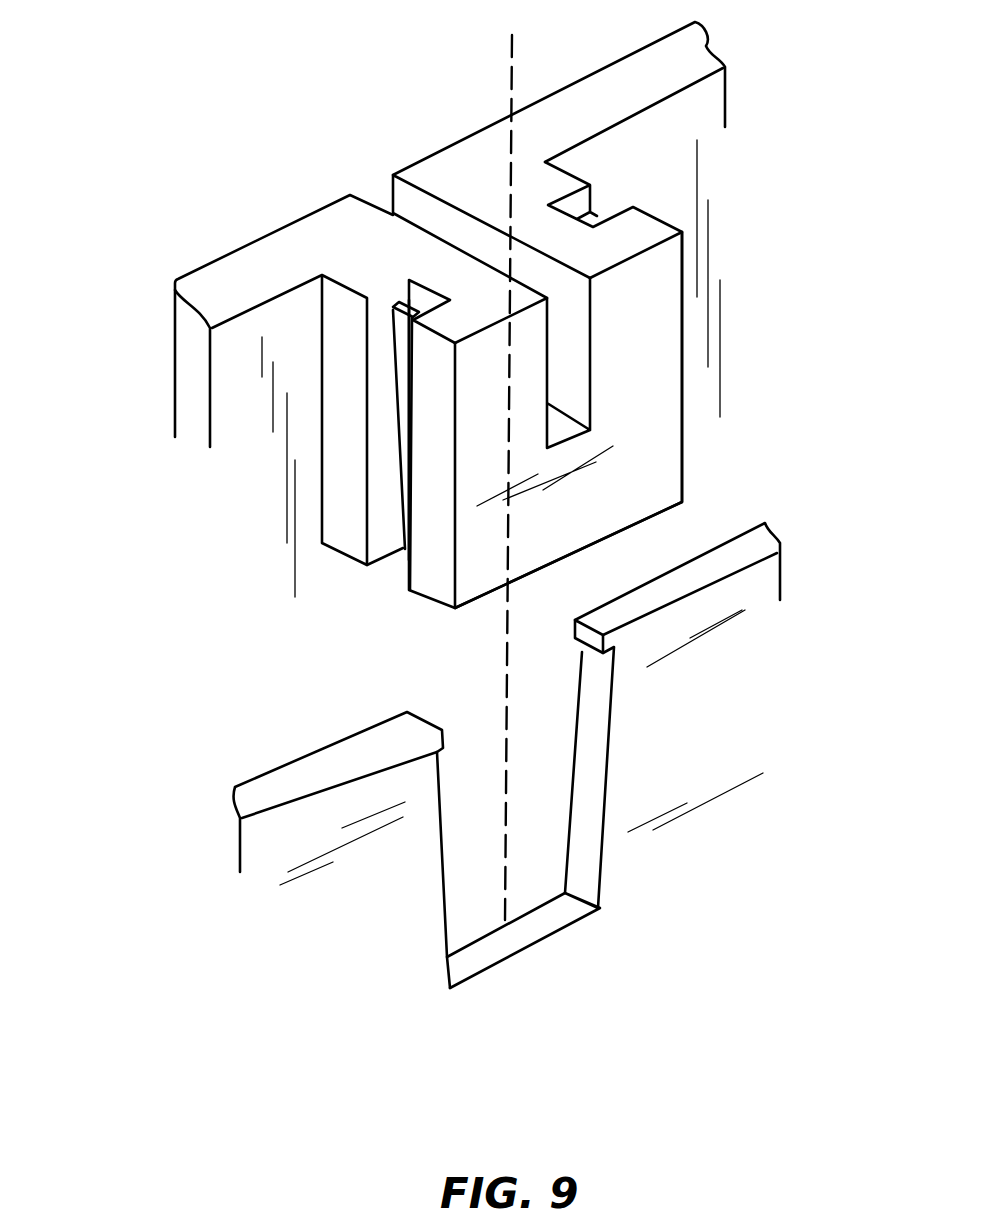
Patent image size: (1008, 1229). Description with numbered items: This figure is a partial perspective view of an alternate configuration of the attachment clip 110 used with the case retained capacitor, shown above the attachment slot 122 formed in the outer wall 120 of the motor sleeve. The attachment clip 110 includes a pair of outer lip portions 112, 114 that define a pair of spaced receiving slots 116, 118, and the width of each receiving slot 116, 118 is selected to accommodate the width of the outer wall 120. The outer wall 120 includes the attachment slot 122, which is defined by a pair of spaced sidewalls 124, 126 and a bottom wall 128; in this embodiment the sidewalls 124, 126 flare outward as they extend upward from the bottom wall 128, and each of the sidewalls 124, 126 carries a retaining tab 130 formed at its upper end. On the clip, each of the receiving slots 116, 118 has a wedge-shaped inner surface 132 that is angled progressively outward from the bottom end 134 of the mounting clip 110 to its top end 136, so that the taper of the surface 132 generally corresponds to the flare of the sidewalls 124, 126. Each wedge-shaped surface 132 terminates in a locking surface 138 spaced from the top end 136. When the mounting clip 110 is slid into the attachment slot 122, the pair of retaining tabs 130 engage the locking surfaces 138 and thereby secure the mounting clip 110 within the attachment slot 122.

The attachment clip 110 is at (577, 340).
The outer lip portion 112 is at (425, 508).
The outer lip portion 114 is at (645, 218).
The receiving slot 116 is at (242, 324).
The receiving slot 118 is at (609, 192).
The outer wall 120 is at (297, 772).
The attachment slot 122 is at (540, 775).
The sidewall 124 is at (437, 850).
The sidewall 126 is at (586, 825).
The bottom wall 128 is at (480, 957).
The retaining tab 130 is at (580, 653).
The wedge-shaped inner surface 132 is at (400, 350).
The bottom end 134 is at (618, 523).
The top end 136 is at (348, 233).
The locking surface 138 is at (413, 303).